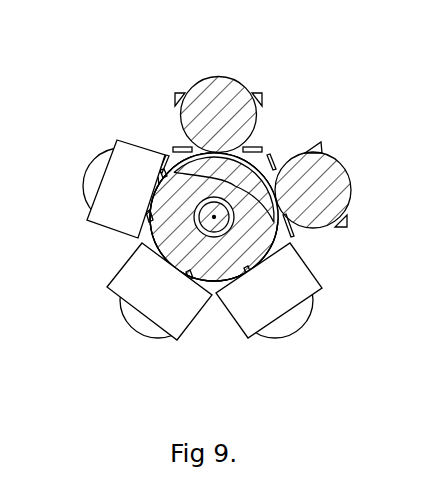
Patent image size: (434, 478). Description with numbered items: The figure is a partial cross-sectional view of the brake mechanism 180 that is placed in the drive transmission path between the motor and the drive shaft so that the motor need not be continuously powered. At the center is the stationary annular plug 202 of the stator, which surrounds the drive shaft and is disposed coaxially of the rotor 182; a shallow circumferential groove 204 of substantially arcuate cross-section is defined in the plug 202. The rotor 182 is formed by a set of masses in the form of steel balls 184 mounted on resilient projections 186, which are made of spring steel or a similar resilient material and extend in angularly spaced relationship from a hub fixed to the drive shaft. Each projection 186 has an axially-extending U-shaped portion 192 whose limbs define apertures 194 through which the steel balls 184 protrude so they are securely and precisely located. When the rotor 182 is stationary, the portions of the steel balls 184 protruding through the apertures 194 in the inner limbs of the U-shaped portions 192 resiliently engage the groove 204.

The brake mechanism 180 is at (112, 90).
The rotor 182 is at (322, 286).
The steel balls 184 is at (232, 98).
The resilient projections 186 is at (107, 230).
The U-shaped portions 192 is at (105, 180).
The apertures 194 is at (274, 173).
The annular plug 202 is at (222, 262).
The circumferential groove 204 is at (173, 172).